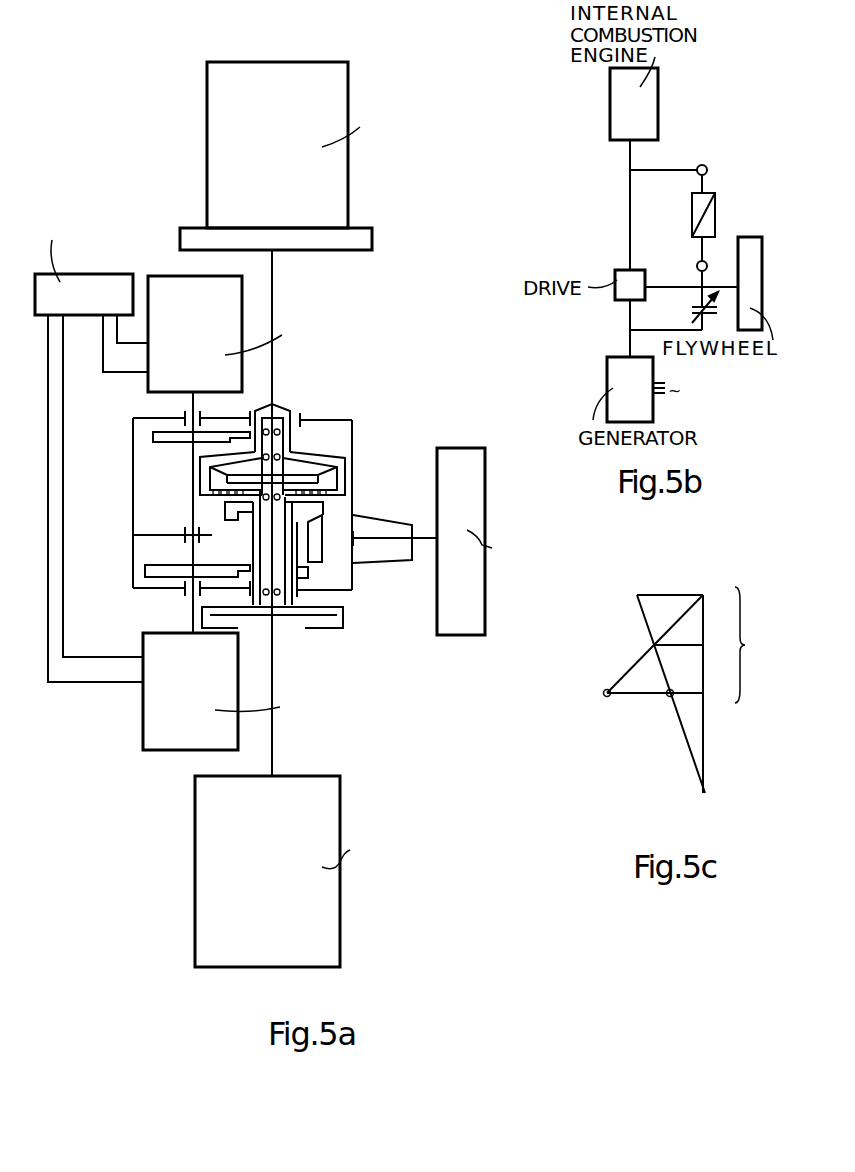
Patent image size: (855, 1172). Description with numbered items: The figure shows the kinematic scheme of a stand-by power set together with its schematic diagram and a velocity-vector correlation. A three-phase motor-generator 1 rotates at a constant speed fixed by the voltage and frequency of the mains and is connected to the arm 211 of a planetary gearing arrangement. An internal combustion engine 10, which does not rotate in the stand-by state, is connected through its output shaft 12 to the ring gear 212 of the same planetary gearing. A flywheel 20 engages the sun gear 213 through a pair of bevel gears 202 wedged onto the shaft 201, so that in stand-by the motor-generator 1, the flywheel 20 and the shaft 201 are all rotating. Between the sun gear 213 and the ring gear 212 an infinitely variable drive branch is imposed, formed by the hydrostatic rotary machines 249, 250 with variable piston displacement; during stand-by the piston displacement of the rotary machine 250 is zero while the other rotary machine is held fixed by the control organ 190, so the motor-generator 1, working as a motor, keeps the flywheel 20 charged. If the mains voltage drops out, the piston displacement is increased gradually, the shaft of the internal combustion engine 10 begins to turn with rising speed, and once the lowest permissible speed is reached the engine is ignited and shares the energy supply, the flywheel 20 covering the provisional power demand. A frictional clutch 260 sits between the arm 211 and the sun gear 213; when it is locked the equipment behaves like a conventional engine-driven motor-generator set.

In FIG. 5a, the internal combustion engine 10 is at (277, 82).
In FIG. 5c, the internal combustion engine 10 is at (684, 689).
In FIG. 5a, the output shaft 12 is at (274, 312).
In FIG. 5a, the control organ 190 is at (82, 290).
In FIG. 5a, the hydrostatic rotary machine 249 is at (167, 293).
In FIG. 5a, the hydrostatic rotary machine 250 is at (155, 735).
In FIG. 5a, the motor-generator 1 is at (202, 868).
In FIG. 5c, the motor-generator 1 is at (692, 645).
In FIG. 5a, the arm 211 is at (291, 480).
In FIG. 5a, the ring gear 212 is at (335, 463).
In FIG. 5a, the sun gear 213 is at (310, 492).
In FIG. 5a, the shaft 201 is at (327, 540).
In FIG. 5a, the pair of bevel gears 202 is at (322, 560).
In FIG. 5a, the frictional clutch 260 is at (325, 628).
In FIG. 5a, the flywheel 20 is at (455, 632).
In FIG. 5c, the flywheel 20 is at (669, 651).